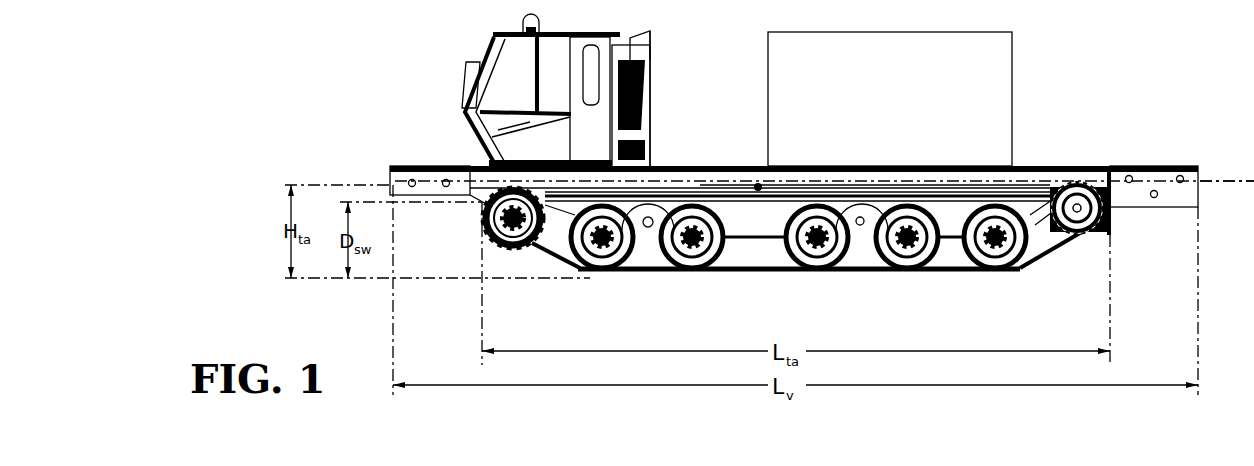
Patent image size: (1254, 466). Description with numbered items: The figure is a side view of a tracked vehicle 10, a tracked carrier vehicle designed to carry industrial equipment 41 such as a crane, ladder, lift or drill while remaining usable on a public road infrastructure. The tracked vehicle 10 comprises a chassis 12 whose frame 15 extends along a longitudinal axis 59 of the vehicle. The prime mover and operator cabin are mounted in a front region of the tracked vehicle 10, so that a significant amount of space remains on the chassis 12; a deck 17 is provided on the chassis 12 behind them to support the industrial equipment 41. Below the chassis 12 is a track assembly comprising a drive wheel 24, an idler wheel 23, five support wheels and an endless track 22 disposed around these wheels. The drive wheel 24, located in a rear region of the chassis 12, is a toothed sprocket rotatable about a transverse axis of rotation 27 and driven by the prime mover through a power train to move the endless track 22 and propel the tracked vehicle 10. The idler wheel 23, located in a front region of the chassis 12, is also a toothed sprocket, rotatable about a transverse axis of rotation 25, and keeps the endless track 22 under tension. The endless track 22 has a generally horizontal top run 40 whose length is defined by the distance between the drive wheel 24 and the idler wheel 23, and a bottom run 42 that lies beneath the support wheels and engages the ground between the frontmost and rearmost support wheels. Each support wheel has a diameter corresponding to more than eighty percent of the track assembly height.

The tracked vehicle 10 is at (426, 87).
The chassis 12 is at (704, 162).
The frame 15 is at (958, 198).
The deck 17 is at (1072, 165).
The endless track 22 is at (812, 267).
The idler wheel 23 is at (488, 254).
The drive wheel 24 is at (1103, 239).
The axis of rotation 25 is at (514, 230).
The axis of rotation 27 is at (1077, 213).
The top run 40 is at (832, 190).
The industrial equipment 41 is at (904, 113).
The bottom run 42 is at (862, 272).
The longitudinal axis 59 is at (1226, 178).